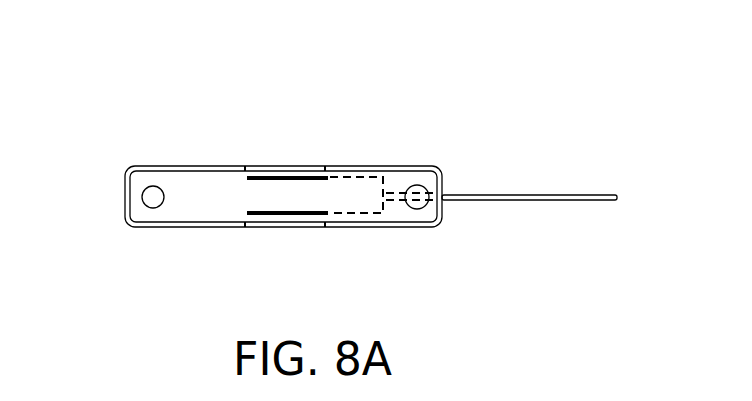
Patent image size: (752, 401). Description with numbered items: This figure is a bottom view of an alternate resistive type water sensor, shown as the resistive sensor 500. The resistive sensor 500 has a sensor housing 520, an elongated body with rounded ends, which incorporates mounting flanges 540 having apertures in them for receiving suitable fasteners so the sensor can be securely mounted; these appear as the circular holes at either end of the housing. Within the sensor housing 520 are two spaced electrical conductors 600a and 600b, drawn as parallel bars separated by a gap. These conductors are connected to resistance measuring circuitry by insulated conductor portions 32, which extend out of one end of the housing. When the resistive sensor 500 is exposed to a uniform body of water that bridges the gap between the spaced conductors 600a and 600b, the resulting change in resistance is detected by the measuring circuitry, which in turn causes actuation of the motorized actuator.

The resistive sensor 500 is at (349, 149).
The sensor housing 520 is at (318, 169).
The mounting flanges 540 is at (275, 225).
The spaced electrical conductor 600a is at (245, 146).
The spaced electrical conductor 600b is at (236, 244).
The insulated conductor portions 32 is at (559, 167).